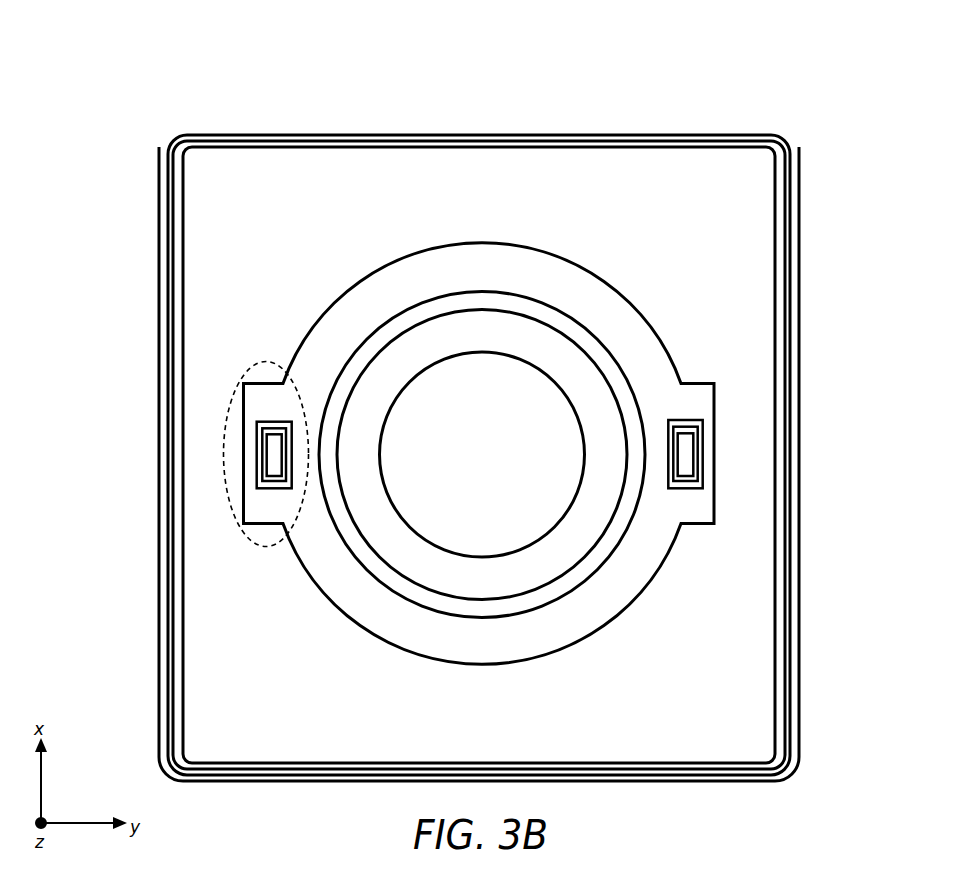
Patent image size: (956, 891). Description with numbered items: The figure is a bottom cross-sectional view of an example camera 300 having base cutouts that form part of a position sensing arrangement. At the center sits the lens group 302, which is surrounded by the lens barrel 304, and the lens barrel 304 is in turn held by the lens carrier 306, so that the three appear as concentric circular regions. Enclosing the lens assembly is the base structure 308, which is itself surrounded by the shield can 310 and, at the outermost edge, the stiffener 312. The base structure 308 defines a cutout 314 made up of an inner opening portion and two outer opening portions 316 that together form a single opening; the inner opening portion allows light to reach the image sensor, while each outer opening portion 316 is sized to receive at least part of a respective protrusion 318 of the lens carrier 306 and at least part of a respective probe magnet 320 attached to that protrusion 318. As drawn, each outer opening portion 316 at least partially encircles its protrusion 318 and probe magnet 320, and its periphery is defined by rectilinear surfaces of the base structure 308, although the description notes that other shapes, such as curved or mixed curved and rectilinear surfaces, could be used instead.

The camera 300 is at (196, 87).
The lens group 302 is at (495, 450).
The lens barrel 304 is at (422, 343).
The lens carrier 306 is at (643, 350).
The base structure 308 is at (682, 224).
The shield can 310 is at (784, 140).
The stiffener 312 is at (801, 190).
The cutout 314 is at (318, 306).
The outer opening portion 316 is at (260, 361).
The protrusion 318 is at (686, 421).
The probe magnet 320 is at (688, 450).